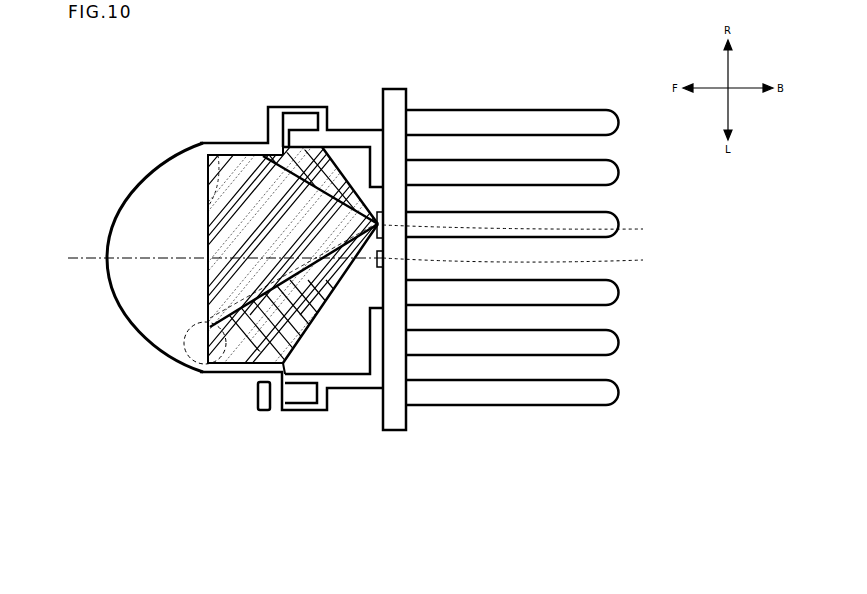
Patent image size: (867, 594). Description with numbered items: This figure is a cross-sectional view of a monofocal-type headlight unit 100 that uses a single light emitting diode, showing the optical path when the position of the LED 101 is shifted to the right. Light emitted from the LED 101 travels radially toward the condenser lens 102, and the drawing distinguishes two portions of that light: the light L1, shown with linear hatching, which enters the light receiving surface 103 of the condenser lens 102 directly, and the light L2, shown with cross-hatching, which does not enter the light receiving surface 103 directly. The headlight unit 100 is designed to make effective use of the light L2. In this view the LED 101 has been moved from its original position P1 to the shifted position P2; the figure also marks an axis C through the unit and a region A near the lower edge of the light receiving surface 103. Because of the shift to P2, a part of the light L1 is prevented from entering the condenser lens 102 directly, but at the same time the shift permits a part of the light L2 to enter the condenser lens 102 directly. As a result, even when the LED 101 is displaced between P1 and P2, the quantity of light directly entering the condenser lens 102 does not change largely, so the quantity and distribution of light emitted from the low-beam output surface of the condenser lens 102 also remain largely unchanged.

The headlight unit 100 is at (275, 59).
The LED 101 is at (376, 214).
The condenser lens 102 is at (135, 216).
The light receiving surface 103 is at (218, 155).
The light L1 is at (215, 285).
The light L2 is at (300, 172).
The region A is at (184, 346).
The optical axis C is at (217, 259).
The position P1 is at (526, 261).
The position P2 is at (526, 229).